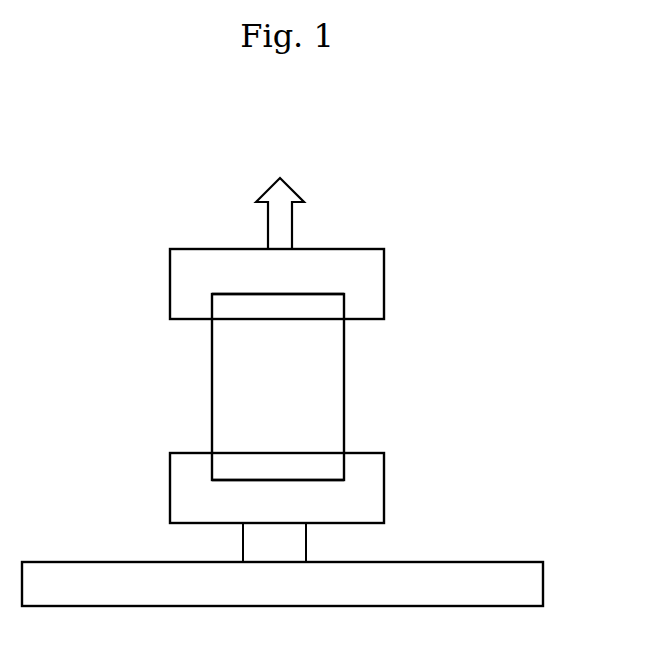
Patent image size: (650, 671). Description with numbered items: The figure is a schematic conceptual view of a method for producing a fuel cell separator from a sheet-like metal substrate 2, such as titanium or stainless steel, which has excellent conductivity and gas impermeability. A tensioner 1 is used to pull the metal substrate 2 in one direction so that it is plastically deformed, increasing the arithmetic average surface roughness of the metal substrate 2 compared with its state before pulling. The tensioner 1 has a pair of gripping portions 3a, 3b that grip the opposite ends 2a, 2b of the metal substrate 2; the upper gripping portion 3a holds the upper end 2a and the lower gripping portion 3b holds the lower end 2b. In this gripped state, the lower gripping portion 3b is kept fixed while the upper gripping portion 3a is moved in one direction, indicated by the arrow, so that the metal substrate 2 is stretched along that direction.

The tensioner 1 is at (419, 169).
The metal substrate 2 is at (334, 399).
The end of the metal substrate 2a is at (233, 303).
The end of the metal substrate 2b is at (233, 471).
The gripping portion 3a is at (360, 283).
The gripping portion 3b is at (348, 513).